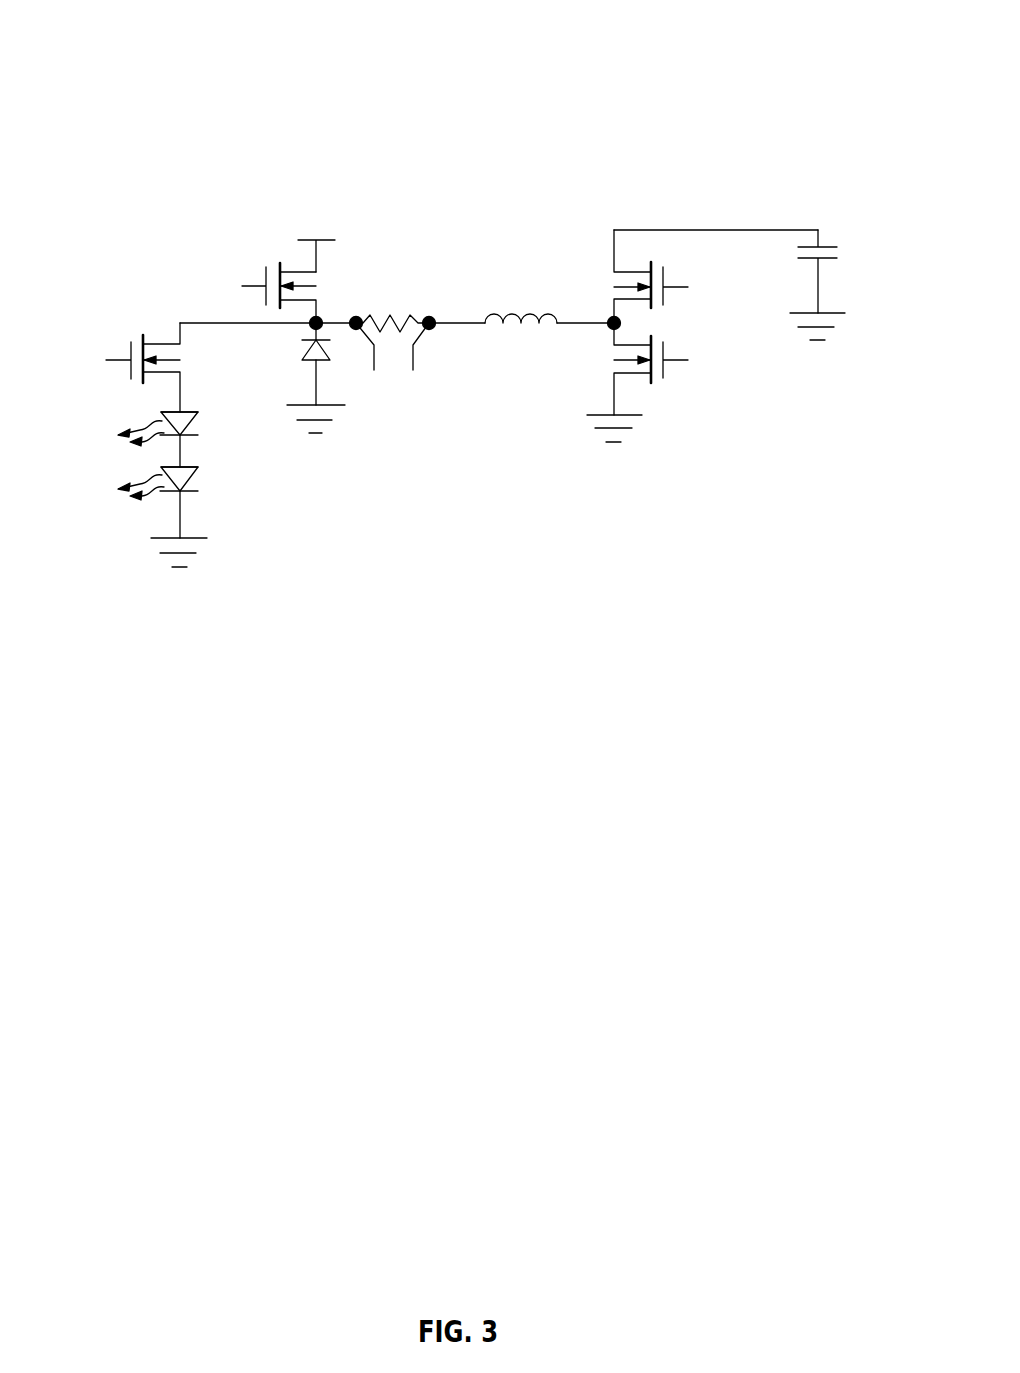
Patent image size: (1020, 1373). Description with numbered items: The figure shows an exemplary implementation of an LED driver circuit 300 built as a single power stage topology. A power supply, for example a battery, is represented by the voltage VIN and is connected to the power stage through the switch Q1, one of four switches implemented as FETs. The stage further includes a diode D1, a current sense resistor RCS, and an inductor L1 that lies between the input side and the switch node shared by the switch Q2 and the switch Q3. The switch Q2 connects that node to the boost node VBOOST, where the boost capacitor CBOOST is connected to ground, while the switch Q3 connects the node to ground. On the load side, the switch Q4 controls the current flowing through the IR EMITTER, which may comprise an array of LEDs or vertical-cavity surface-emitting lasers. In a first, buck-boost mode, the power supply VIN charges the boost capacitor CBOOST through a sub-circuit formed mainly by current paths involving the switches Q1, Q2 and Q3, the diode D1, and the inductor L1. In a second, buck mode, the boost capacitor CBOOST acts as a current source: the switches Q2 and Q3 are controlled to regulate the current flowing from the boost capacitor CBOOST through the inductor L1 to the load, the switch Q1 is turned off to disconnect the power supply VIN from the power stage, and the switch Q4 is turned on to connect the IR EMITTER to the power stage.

The LED driver circuit 300 is at (473, 36).
The power supply voltage VIN is at (316, 242).
The switch Q1 is at (297, 293).
The diode D1 is at (302, 378).
The current sense resistor RCS is at (392, 327).
The inductor L1 is at (521, 299).
The switch Q2 is at (632, 276).
The switch Q3 is at (632, 382).
The boost voltage node VBOOST is at (737, 212).
The boost capacitor CBOOST is at (861, 285).
The switch Q4 is at (164, 367).
The IR emitter IR EMITTER is at (112, 489).